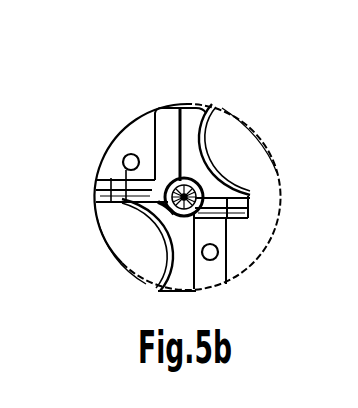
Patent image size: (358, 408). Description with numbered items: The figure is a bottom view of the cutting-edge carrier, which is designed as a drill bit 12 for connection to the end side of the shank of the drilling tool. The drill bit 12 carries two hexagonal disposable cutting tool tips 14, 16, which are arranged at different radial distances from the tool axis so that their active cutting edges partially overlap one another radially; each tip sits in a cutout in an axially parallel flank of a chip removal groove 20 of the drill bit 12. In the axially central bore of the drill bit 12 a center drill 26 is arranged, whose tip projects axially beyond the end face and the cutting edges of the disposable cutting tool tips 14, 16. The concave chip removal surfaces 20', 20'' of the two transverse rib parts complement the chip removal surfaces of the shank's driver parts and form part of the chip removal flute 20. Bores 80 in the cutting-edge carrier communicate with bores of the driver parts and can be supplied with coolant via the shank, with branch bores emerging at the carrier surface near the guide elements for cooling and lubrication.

The drill bit 12 is at (187, 105).
The disposable cutting tool tip 14 is at (246, 196).
The disposable cutting tool tip 16 is at (125, 203).
The chip removal groove 20 is at (188, 201).
The concave chip removal surface 20' is at (230, 110).
The concave chip removal surface 20'' is at (140, 261).
The center drill 26 is at (206, 186).
The bore 80 is at (131, 162).